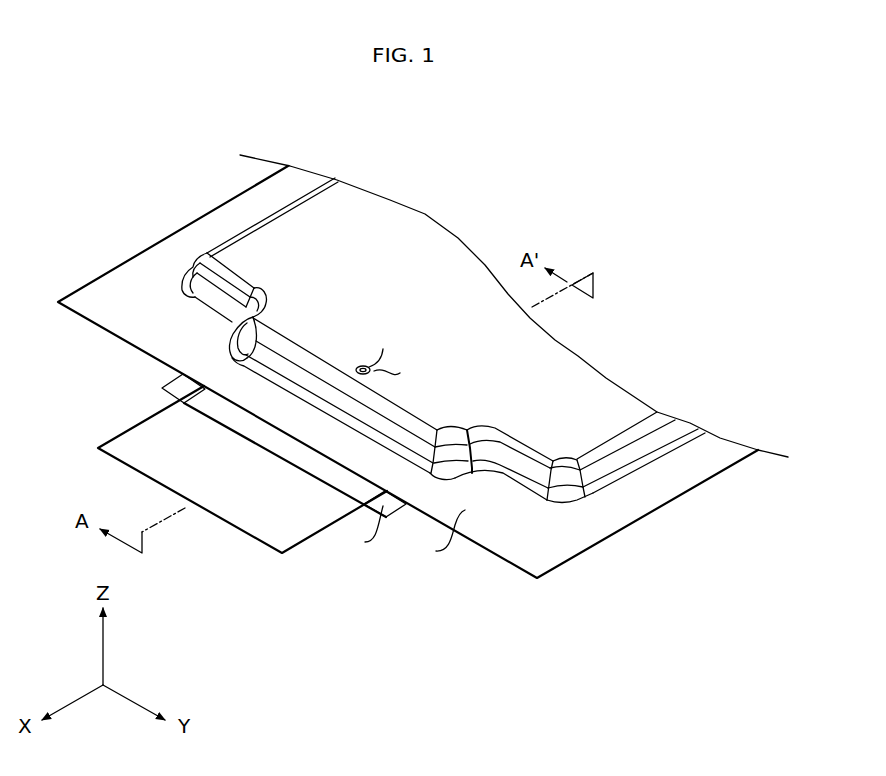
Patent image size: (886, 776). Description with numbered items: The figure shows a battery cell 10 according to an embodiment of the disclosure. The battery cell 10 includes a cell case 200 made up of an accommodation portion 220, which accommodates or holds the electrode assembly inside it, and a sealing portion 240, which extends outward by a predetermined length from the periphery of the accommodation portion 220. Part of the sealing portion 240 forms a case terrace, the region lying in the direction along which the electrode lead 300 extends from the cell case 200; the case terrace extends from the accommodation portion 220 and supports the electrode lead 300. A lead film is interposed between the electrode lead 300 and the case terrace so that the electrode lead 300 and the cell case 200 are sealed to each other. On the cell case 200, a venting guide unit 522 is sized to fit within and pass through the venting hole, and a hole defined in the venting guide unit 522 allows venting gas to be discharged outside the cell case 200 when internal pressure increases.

The battery cell 10 is at (423, 347).
The cell case 200 is at (423, 373).
The accommodation portion 220 is at (589, 395).
The sealing portion 240 is at (216, 226).
The electrode lead 300 is at (143, 441).
The venting guide unit 522 is at (358, 368).